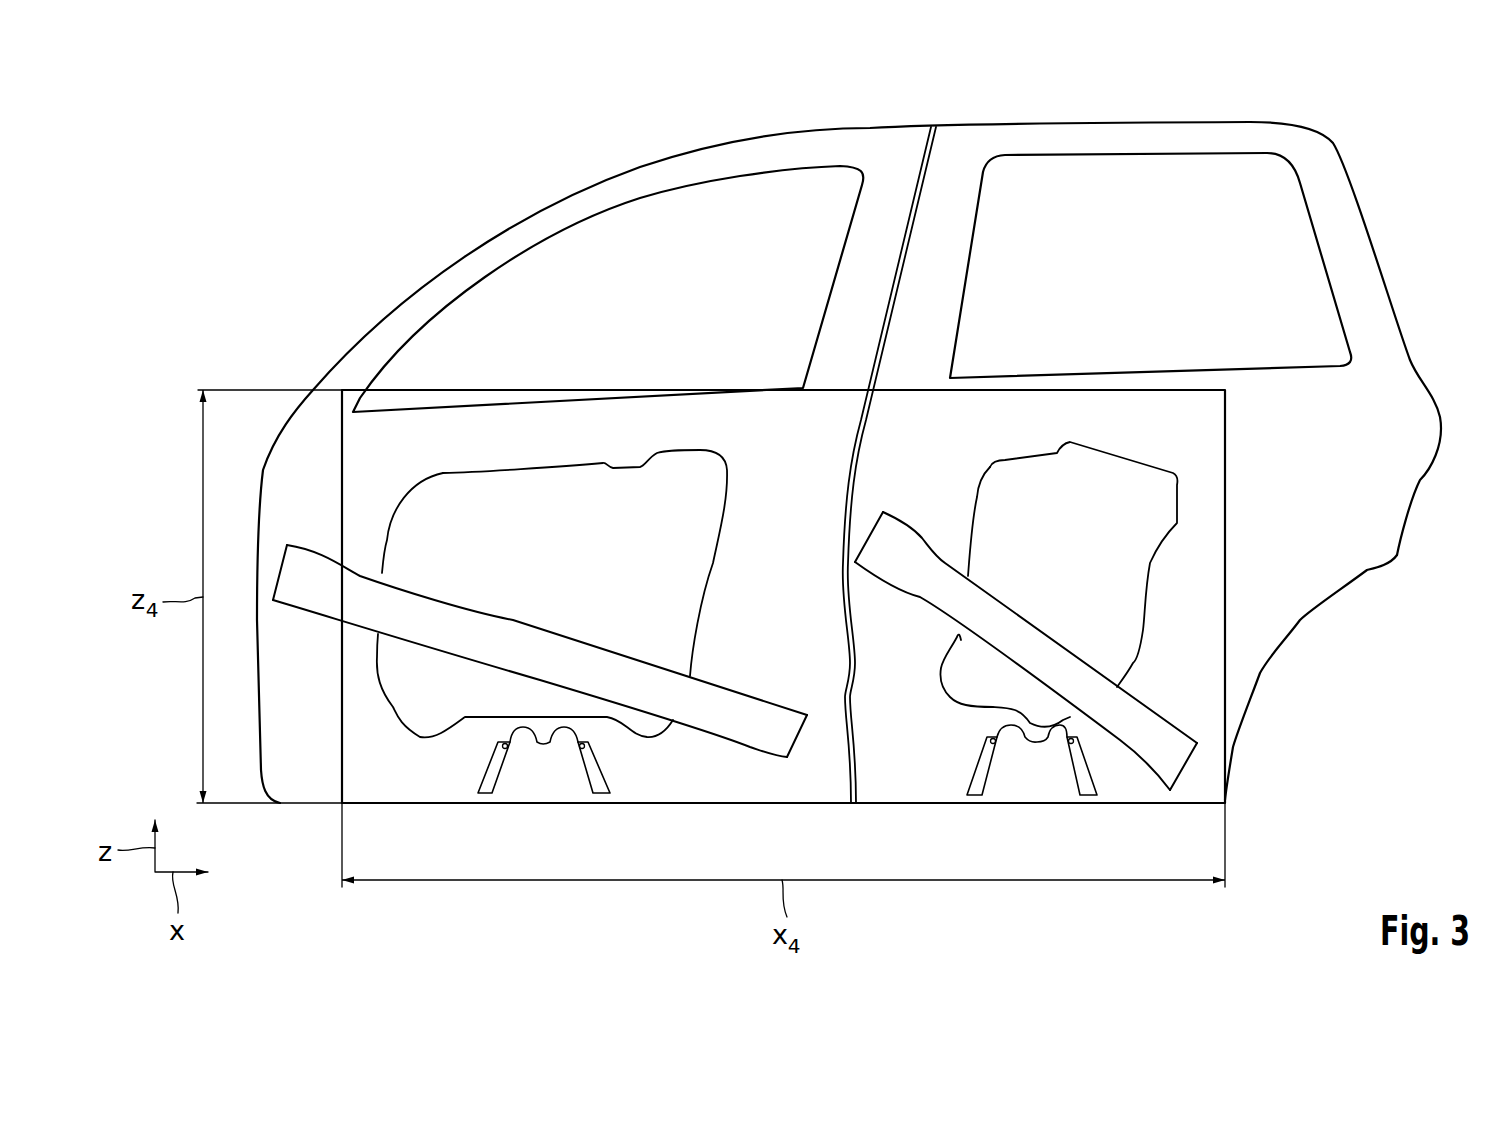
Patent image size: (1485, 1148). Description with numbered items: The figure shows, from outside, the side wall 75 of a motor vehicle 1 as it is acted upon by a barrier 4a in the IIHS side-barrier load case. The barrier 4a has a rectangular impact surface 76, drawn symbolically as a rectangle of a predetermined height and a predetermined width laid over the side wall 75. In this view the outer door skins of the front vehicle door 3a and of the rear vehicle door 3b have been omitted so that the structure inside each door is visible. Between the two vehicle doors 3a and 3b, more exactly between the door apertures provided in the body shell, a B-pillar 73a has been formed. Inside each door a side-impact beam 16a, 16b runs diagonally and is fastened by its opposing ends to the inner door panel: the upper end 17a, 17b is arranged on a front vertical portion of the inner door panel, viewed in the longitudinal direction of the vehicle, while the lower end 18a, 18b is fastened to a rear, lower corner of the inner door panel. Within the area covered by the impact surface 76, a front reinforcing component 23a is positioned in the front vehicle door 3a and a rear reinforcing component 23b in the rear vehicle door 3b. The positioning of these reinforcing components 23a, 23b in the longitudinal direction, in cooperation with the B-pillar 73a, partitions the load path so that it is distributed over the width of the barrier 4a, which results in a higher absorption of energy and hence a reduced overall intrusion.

The motor vehicle 1 is at (849, 459).
The side wall 75 is at (1373, 183).
The front vehicle door 3a is at (728, 157).
The rear vehicle door 3b is at (1230, 147).
The B-pillar 73a is at (936, 117).
The barrier 4a is at (1315, 677).
The impact surface 76 is at (1228, 603).
The side-impact beam 16a is at (511, 599).
The upper end of side-impact beam 17a is at (303, 567).
The lower end of side-impact beam 18a is at (760, 732).
The side-impact beam 16b is at (1017, 690).
The upper end of side-impact beam 17b is at (880, 557).
The lower end of side-impact beam 18b is at (1152, 753).
The front reinforcing component 23a is at (487, 803).
The rear reinforcing component 23b is at (977, 803).